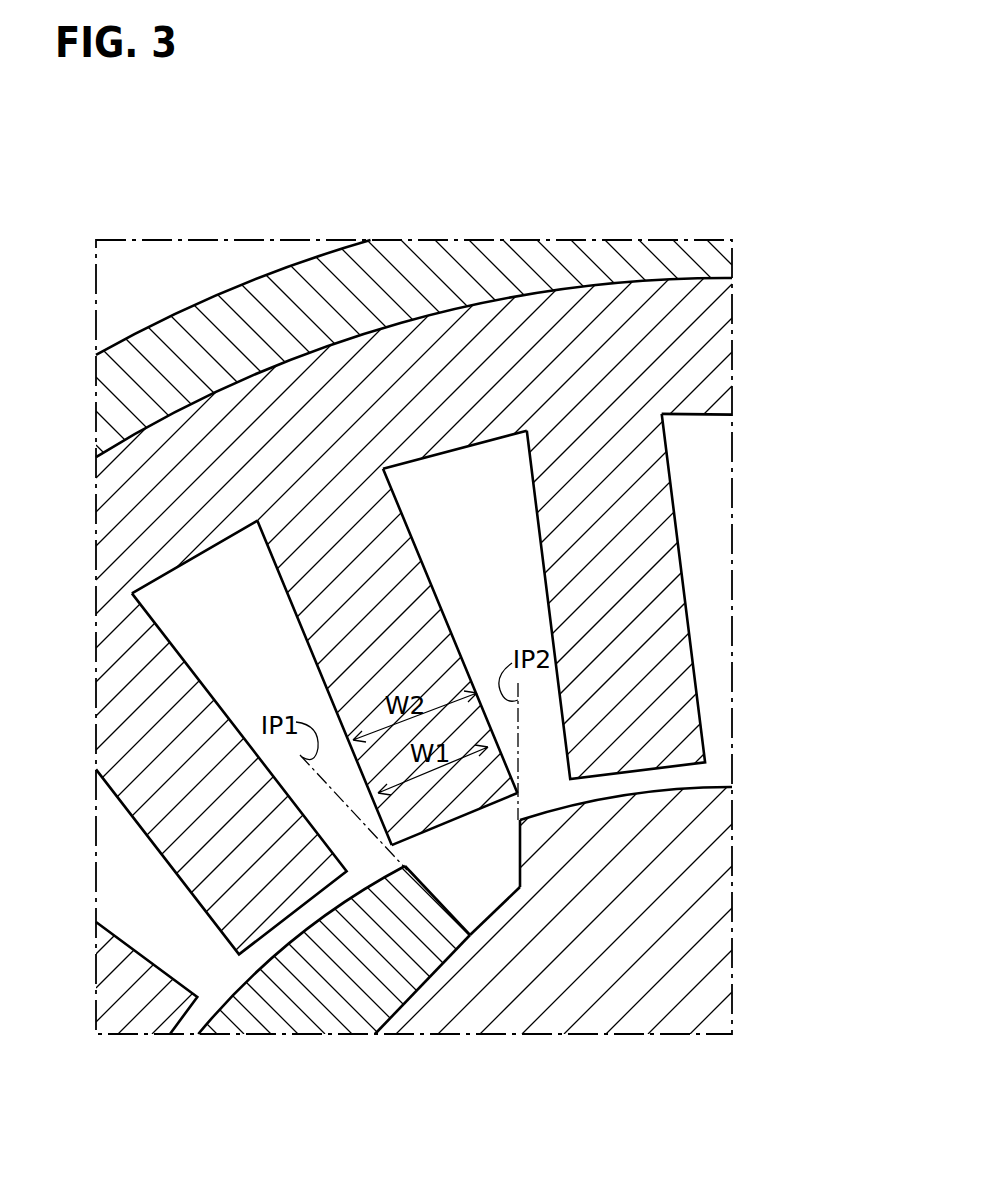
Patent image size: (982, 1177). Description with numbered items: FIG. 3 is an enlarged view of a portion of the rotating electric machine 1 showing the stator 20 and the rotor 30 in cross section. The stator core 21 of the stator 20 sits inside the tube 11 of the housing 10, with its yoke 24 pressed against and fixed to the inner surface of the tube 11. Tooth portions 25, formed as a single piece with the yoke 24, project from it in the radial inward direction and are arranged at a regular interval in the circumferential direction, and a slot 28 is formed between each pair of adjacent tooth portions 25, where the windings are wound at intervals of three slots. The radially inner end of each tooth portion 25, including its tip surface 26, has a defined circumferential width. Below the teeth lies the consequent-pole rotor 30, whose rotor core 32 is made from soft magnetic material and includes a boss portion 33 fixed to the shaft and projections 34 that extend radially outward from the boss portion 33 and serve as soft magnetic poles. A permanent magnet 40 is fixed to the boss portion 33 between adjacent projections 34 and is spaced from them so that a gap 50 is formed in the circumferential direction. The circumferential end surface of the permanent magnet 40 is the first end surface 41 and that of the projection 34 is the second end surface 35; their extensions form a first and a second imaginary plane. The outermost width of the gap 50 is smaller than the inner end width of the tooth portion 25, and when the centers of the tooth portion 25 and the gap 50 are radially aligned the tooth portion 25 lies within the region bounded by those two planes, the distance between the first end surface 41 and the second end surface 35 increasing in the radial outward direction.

The rotating electric machine 1 is at (222, 206).
The housing 10 is at (174, 316).
The tube 11 is at (147, 342).
The stator 20 is at (688, 620).
The stator core 21 is at (305, 188).
The yoke 24 is at (310, 413).
The tooth portion 25 is at (413, 595).
The tooth tip surface 26 is at (457, 822).
The slot 28 is at (473, 490).
The rotor 30 is at (710, 787).
The rotor core 32 is at (814, 808).
The boss portion 33 is at (713, 950).
The projection 34 is at (731, 808).
The second end surface 35 is at (520, 857).
The permanent magnet 40 is at (312, 993).
The first end surface 41 is at (477, 885).
The gap 50 is at (452, 907).